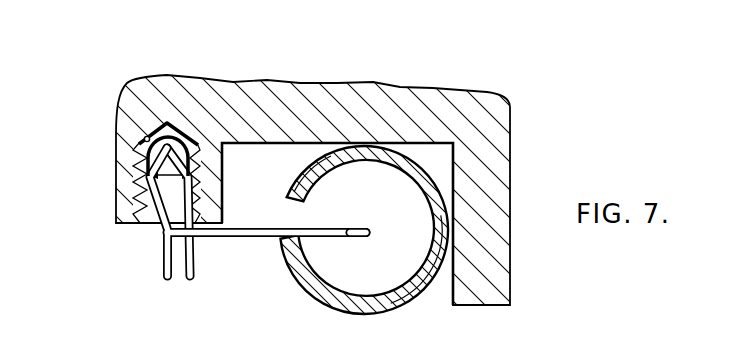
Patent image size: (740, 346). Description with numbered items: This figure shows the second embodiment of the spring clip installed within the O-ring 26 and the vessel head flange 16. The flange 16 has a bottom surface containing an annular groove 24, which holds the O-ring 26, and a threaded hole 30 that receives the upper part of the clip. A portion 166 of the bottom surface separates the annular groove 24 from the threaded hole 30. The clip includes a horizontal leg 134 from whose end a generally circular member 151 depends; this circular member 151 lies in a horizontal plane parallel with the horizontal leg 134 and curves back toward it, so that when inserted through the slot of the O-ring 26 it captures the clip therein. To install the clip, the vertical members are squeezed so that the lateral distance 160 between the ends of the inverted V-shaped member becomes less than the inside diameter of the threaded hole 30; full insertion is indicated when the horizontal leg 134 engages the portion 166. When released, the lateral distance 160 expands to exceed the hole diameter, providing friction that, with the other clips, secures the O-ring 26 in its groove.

The vessel head flange 16 is at (368, 93).
The annular groove 24 is at (260, 173).
The O-ring 26 is at (393, 302).
The threaded hole 30 is at (146, 137).
The horizontal leg 134 is at (254, 238).
The circular member 151 is at (347, 231).
The lateral distance 160 is at (152, 178).
The portion of the bottom surface 166 is at (206, 222).